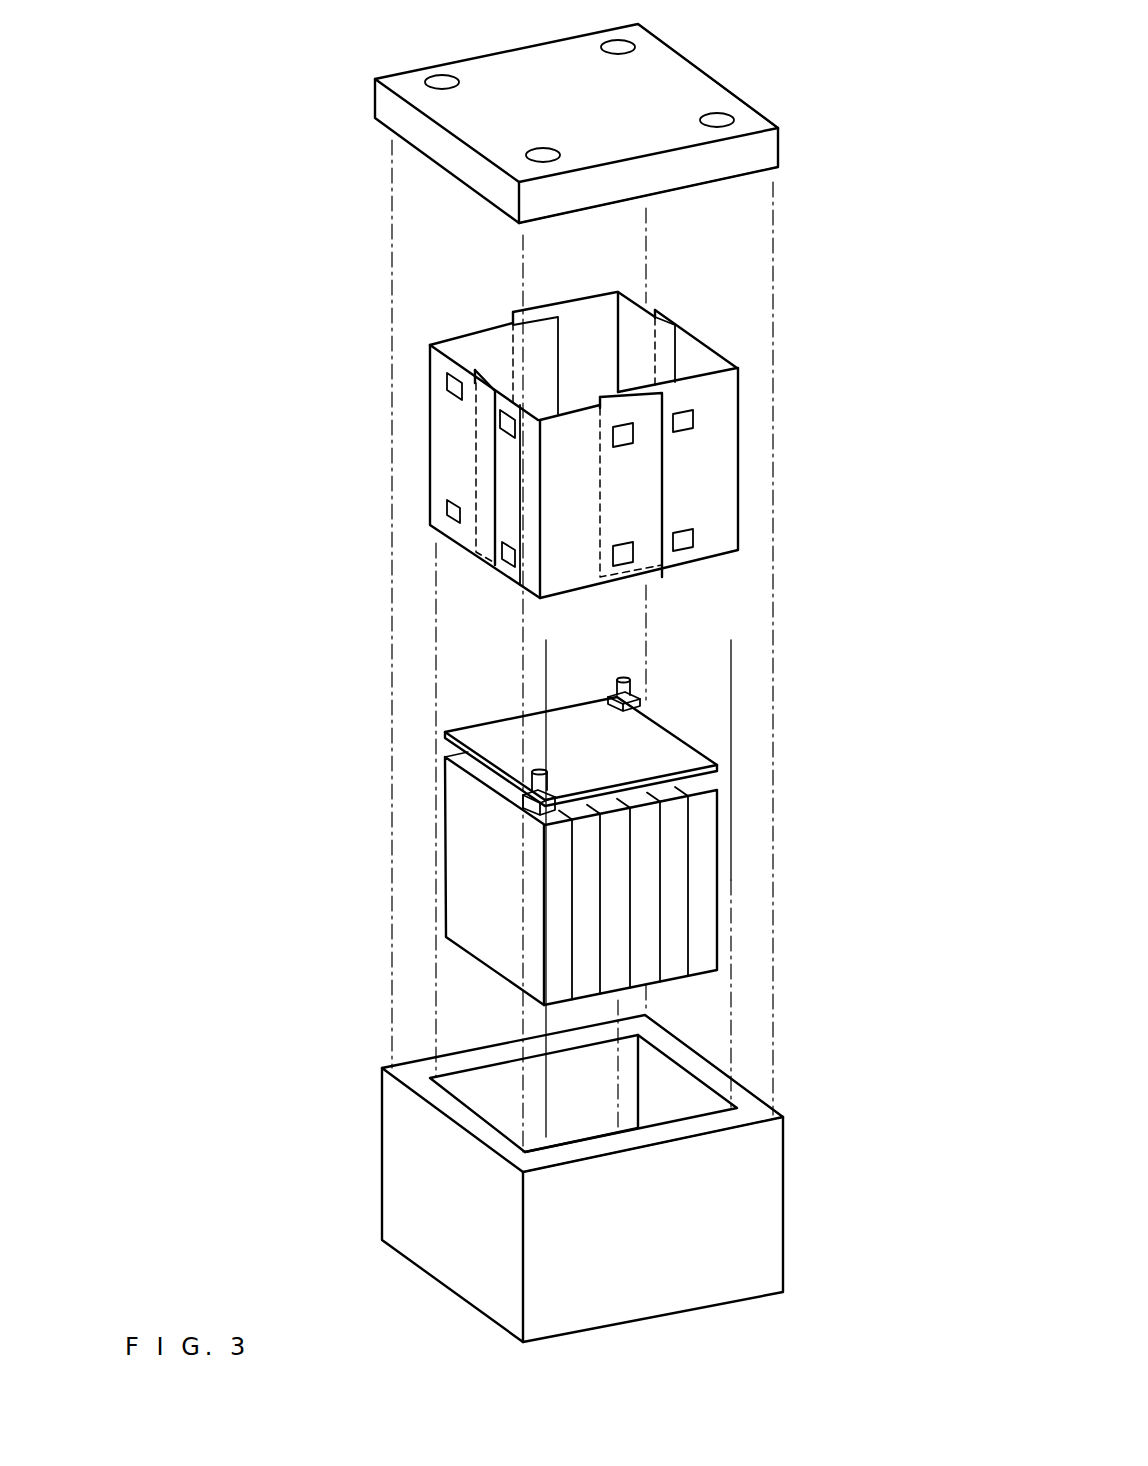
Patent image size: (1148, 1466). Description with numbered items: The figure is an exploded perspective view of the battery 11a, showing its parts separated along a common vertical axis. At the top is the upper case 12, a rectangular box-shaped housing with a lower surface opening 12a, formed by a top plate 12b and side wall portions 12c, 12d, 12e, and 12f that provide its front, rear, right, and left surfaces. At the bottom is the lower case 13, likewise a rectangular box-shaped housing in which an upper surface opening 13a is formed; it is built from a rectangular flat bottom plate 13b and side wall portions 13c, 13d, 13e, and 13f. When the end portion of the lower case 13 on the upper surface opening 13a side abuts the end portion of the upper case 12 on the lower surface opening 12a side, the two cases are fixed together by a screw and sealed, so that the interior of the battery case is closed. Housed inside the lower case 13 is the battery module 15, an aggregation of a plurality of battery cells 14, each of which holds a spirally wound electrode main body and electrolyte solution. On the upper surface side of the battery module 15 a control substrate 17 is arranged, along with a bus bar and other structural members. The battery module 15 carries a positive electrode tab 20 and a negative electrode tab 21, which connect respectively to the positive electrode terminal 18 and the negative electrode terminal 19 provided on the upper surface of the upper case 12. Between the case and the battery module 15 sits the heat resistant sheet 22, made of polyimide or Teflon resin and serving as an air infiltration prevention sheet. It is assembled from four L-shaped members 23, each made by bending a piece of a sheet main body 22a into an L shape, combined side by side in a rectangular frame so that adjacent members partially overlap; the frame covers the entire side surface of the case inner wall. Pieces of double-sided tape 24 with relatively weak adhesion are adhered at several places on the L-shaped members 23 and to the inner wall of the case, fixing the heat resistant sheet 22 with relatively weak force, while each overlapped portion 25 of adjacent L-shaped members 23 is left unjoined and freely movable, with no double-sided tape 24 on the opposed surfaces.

The battery 11a is at (795, 1107).
The upper case 12 is at (611, 119).
The lower surface opening 12a is at (722, 182).
The top plate 12b is at (690, 72).
The side wall portion 12c is at (440, 152).
The side wall portion 12d is at (755, 107).
The side wall portion 12e is at (773, 150).
The side wall portion 12f is at (492, 53).
The lower case 13 is at (589, 1185).
The upper surface opening 13a is at (665, 1080).
The bottom plate 13b is at (740, 1303).
The side wall portion 13c is at (443, 1272).
The side wall portion 13d is at (788, 1173).
The side wall portion 13e is at (640, 1300).
The side wall portion 13f is at (383, 1127).
The battery cell 14 is at (705, 938).
The battery module 15 is at (604, 838).
The control substrate 17 is at (653, 745).
The positive electrode terminal 18 is at (633, 682).
The negative electrode terminal 19 is at (530, 778).
The positive electrode tab 20 is at (645, 705).
The negative electrode tab 21 is at (525, 795).
The heat resistant sheet 22 is at (598, 445).
The sheet main body 22a is at (628, 292).
The L-shaped member 23 is at (593, 310).
The double-sided tape 24 is at (503, 430).
The overlapped portion 25 is at (530, 305).